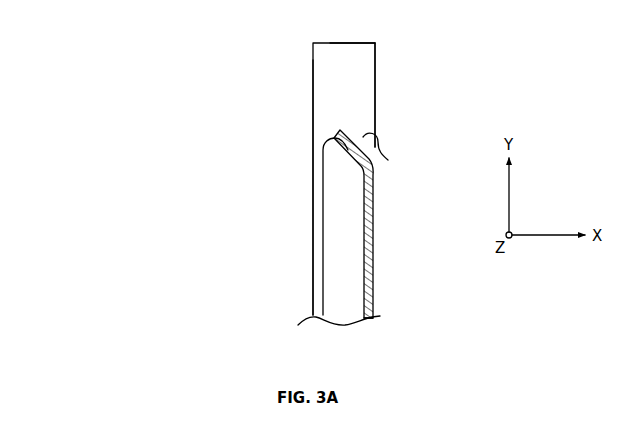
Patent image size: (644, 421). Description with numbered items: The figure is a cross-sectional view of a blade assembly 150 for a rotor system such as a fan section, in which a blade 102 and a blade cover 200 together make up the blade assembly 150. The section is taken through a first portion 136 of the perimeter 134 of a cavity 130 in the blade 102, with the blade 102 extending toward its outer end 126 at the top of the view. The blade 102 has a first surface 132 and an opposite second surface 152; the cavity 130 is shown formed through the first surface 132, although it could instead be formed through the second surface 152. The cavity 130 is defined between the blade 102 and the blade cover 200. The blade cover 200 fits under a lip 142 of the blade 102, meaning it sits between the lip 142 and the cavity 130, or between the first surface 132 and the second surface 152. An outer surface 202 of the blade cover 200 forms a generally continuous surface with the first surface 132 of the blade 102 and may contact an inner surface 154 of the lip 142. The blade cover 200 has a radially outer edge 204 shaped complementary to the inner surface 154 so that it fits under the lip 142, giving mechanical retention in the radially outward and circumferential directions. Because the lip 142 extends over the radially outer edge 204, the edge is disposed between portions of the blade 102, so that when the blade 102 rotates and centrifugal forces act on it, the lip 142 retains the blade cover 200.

The blade assembly 150 is at (164, 60).
The blade 102 is at (333, 76).
The top end 126 is at (358, 43).
The first surface 132 is at (375, 65).
The second surface 152 is at (313, 123).
The radially outer edge 204 is at (333, 165).
The blade cover 200 is at (375, 266).
The outer surface 202 is at (375, 299).
The perimeter 134 is at (377, 152).
The inner surface 154 is at (366, 136).
The lip 142 is at (366, 142).
The first portion 136 is at (389, 176).
The cavity 130 is at (340, 283).